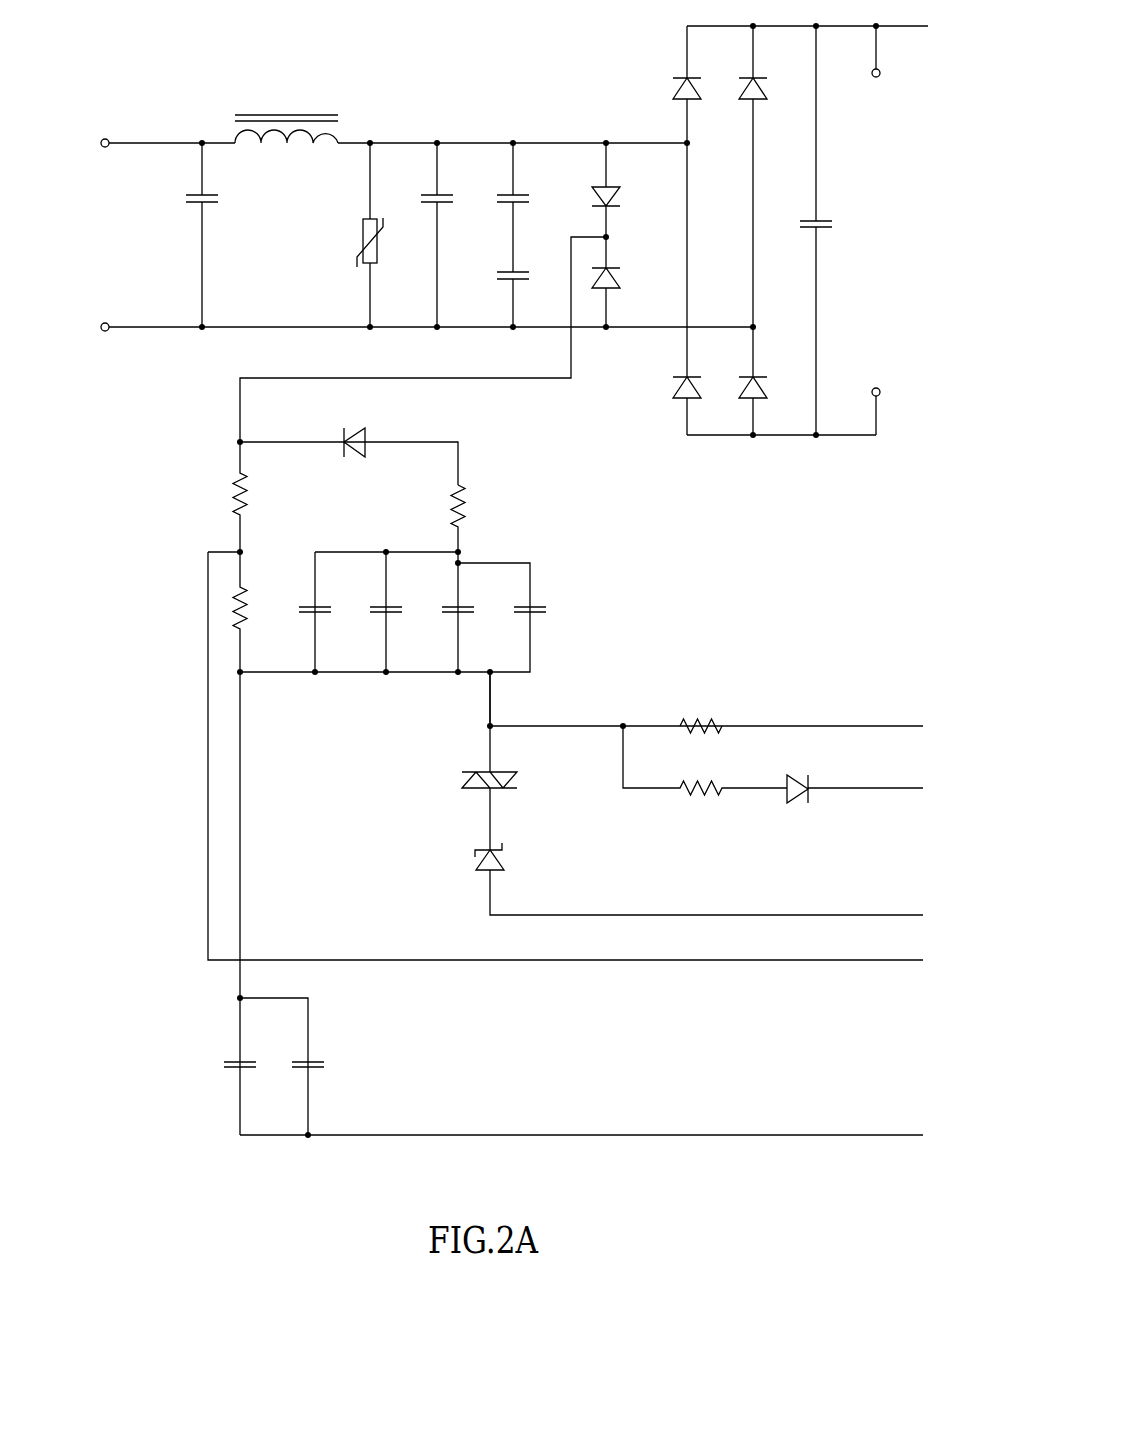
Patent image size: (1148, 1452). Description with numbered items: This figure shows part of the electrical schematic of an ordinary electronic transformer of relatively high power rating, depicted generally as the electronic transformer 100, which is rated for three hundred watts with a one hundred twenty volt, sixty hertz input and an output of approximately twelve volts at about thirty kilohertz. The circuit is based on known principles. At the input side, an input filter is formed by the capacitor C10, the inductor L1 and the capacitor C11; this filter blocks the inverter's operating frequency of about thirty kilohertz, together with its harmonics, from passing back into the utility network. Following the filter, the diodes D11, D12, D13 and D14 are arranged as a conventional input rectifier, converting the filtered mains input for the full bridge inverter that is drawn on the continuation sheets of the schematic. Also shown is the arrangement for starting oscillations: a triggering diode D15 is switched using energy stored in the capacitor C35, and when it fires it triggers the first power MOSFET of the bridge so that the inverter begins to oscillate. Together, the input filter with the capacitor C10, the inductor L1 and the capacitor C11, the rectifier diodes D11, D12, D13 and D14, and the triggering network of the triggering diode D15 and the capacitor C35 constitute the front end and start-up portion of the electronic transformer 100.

The electronic transformer 100 is at (254, 1176).
The capacitor C10 is at (220, 235).
The inductor L1 is at (286, 141).
The capacitor C11 is at (456, 235).
The diode D11 is at (706, 289).
The diode D12 is at (708, 84).
The diode D13 is at (772, 381).
The diode D14 is at (774, 176).
The triggering diode D15 is at (504, 761).
The capacitor C35 is at (294, 1066).